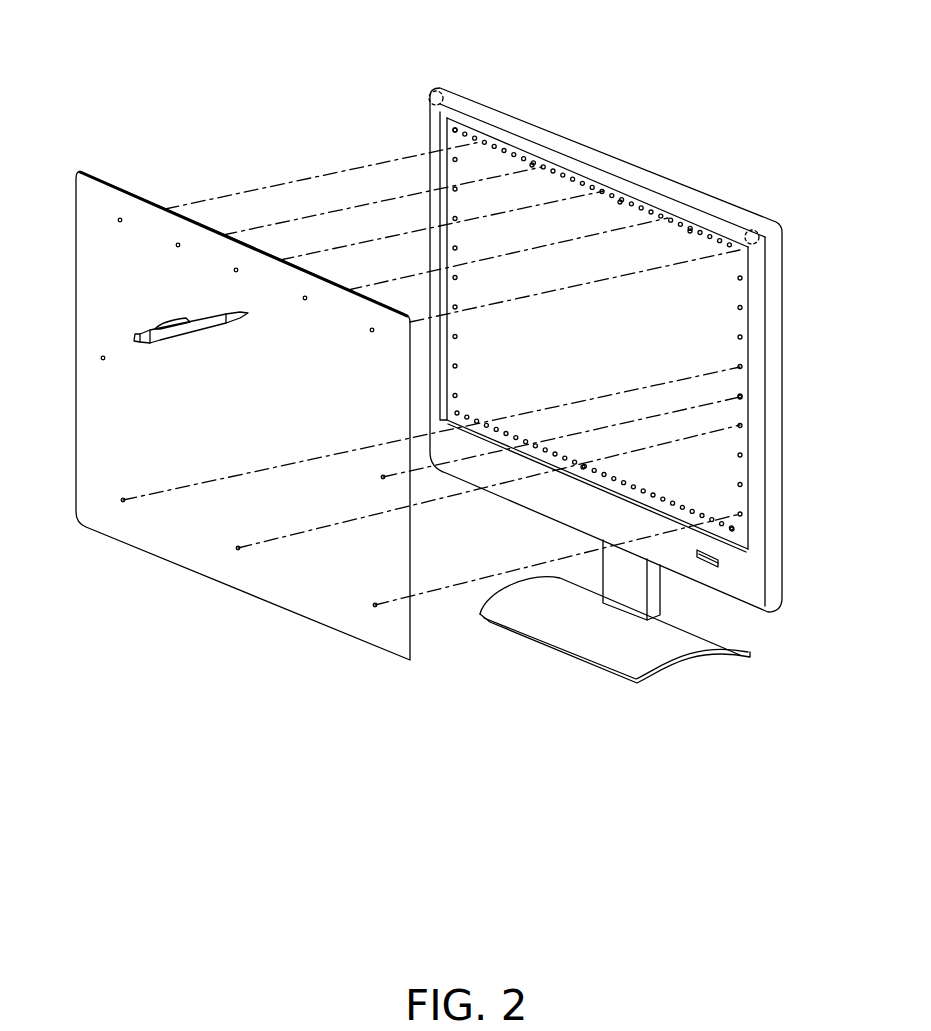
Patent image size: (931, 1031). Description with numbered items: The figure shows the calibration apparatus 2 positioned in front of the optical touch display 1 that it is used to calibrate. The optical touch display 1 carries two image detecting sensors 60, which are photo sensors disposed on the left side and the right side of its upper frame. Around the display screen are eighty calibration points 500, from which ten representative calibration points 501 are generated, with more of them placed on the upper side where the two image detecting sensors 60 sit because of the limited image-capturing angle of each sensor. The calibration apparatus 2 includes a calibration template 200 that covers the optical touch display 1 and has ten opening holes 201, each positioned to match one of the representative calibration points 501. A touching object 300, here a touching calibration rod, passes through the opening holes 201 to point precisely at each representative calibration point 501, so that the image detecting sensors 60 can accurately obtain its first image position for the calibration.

The optical touch display 1 is at (462, 90).
The calibration apparatus 2 is at (243, 92).
The image detecting sensors 60 is at (428, 106).
The calibration template 200 is at (88, 192).
The opening holes 201 is at (121, 222).
The touching object 300 is at (195, 323).
The calibration points 500 is at (505, 150).
The representative calibration points 501 is at (533, 164).